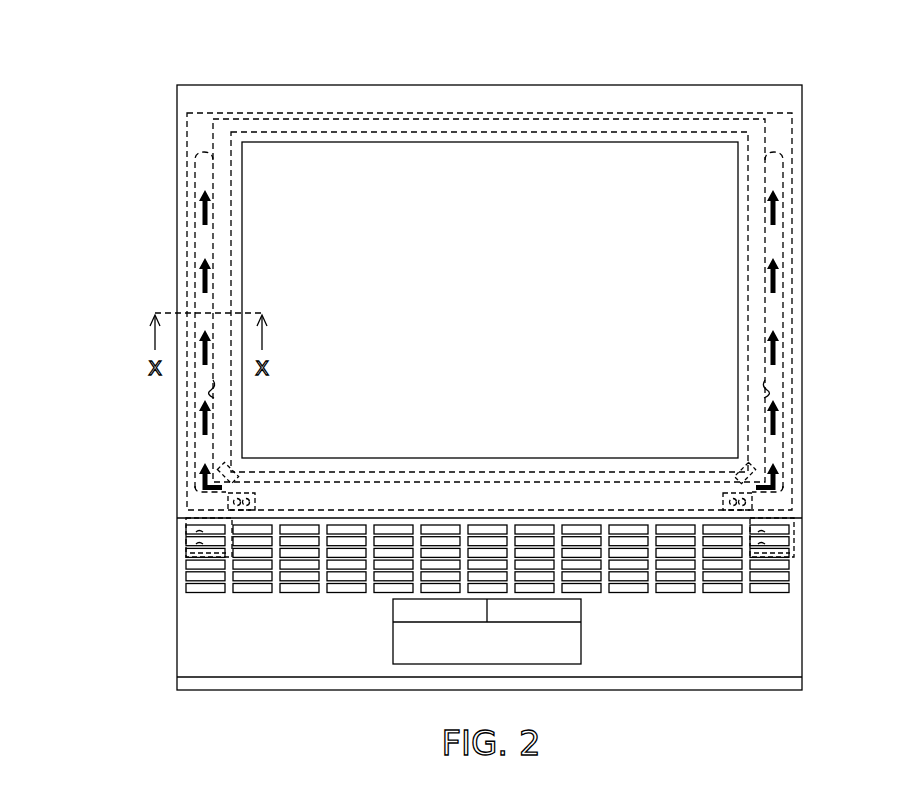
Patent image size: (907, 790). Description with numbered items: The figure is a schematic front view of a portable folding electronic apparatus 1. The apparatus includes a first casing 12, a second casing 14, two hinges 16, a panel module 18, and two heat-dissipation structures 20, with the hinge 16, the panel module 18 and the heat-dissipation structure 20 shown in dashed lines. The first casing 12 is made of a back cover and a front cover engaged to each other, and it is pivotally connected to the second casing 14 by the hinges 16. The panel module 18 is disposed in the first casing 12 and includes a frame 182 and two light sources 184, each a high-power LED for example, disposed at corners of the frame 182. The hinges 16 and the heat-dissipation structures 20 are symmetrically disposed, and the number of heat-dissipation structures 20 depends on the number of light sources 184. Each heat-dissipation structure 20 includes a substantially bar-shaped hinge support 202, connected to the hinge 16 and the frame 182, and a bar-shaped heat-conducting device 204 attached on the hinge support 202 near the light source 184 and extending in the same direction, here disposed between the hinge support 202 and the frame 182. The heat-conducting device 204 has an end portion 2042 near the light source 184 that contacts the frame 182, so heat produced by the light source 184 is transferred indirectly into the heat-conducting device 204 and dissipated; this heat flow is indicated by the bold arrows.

The portable folding electronic apparatus 1 is at (168, 64).
The first casing 12 is at (550, 86).
The second casing 14 is at (800, 632).
The hinge 16 is at (187, 519).
The panel module 18 is at (318, 365).
The frame 182 is at (232, 393).
The light source 184 is at (232, 468).
The heat-dissipation structure 20 is at (489, 318).
The hinge support 202 is at (489, 340).
The heat-conducting device 204 is at (195, 165).
The end portion 2042 is at (247, 482).